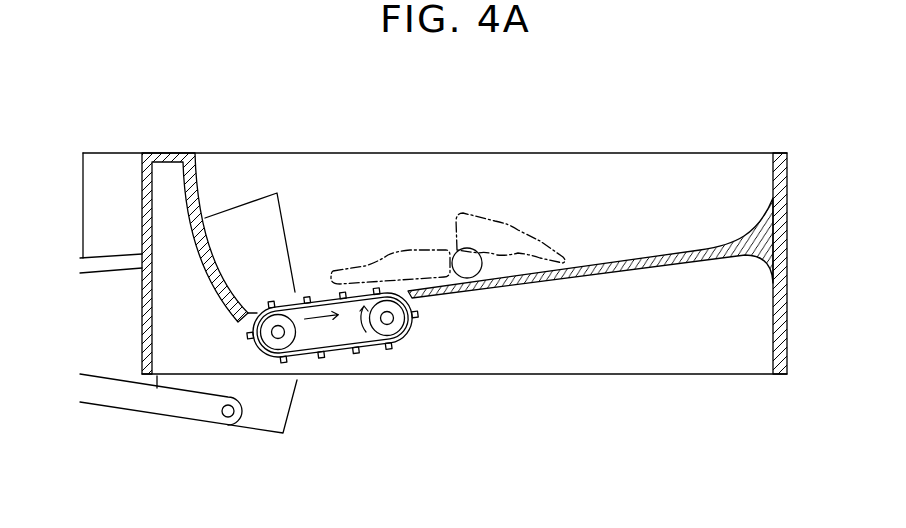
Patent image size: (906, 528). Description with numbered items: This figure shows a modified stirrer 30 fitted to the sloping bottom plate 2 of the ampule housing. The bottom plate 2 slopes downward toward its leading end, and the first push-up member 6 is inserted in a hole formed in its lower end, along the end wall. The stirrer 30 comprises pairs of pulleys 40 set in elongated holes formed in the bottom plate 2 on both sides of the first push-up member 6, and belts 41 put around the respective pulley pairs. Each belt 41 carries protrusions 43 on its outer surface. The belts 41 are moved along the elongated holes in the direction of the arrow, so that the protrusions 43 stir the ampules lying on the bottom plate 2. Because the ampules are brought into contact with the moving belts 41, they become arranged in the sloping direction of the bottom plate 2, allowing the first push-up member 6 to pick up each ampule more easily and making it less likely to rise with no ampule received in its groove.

The bottom plate 2 is at (605, 268).
The first push-up member 6 is at (248, 213).
The modified stirrer 30 is at (323, 290).
The pulleys 40 is at (284, 338).
The belts 41 is at (366, 343).
The protrusions 43 is at (393, 352).